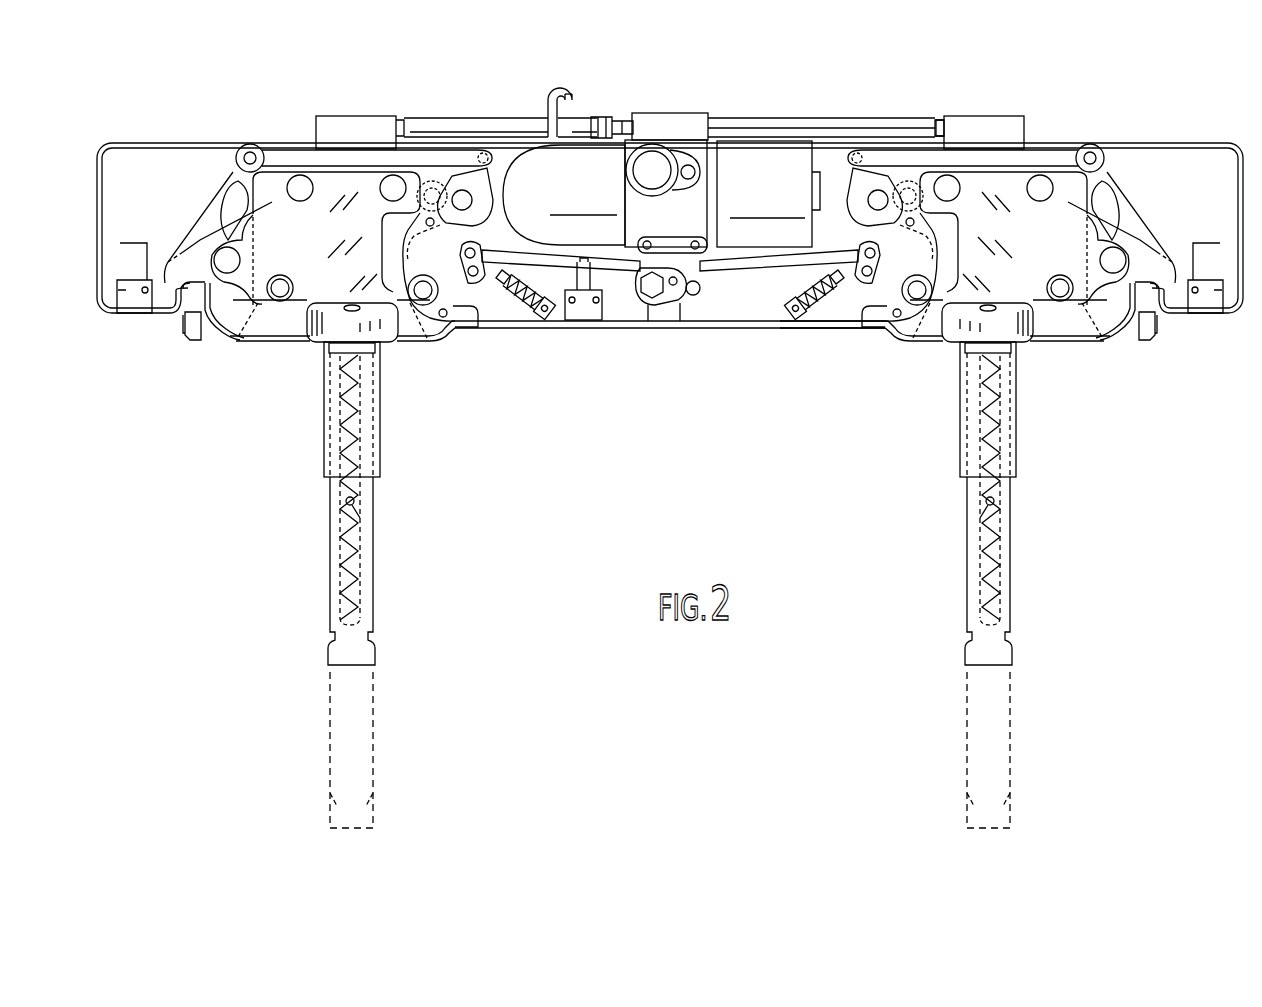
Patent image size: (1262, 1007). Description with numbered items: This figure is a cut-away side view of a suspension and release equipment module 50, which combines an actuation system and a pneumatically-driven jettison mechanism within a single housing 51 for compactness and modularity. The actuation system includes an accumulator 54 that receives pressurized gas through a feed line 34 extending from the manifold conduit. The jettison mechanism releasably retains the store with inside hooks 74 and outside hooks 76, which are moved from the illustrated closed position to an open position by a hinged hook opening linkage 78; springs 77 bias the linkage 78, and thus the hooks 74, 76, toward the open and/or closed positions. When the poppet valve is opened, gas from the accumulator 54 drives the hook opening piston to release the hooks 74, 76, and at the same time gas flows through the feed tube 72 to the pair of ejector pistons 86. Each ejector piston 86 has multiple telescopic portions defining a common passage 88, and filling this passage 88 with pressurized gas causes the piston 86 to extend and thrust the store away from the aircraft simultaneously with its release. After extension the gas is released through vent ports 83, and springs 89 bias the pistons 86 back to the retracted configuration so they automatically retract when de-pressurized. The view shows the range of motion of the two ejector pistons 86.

The feed line 34 is at (560, 84).
The suspension and release equipment (S & RE) module 50 is at (716, 97).
The housing 51 is at (184, 142).
The accumulator 54 is at (787, 150).
The feed tube 72 is at (473, 124).
The inside hook 74 is at (447, 337).
The outside hook 76 is at (198, 332).
The spring 77 is at (528, 310).
The hook opening linkage 78 is at (277, 143).
The vent port 83 is at (362, 517).
The ejector piston 86 is at (382, 463).
The passage 88 is at (340, 425).
The spring 89 is at (360, 428).